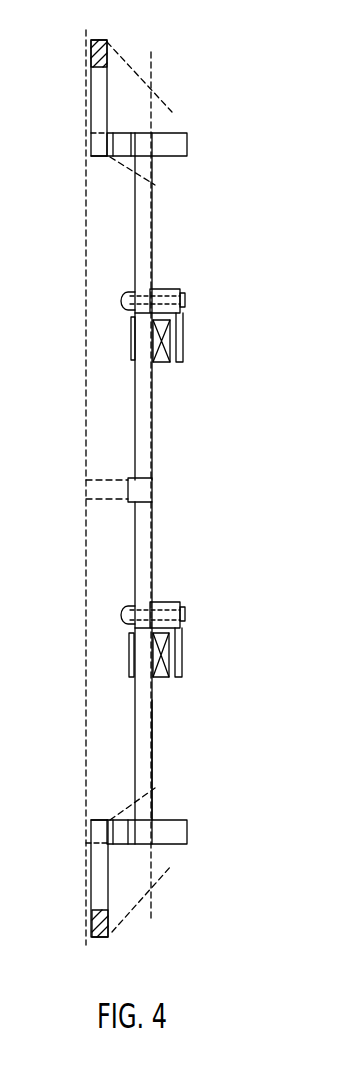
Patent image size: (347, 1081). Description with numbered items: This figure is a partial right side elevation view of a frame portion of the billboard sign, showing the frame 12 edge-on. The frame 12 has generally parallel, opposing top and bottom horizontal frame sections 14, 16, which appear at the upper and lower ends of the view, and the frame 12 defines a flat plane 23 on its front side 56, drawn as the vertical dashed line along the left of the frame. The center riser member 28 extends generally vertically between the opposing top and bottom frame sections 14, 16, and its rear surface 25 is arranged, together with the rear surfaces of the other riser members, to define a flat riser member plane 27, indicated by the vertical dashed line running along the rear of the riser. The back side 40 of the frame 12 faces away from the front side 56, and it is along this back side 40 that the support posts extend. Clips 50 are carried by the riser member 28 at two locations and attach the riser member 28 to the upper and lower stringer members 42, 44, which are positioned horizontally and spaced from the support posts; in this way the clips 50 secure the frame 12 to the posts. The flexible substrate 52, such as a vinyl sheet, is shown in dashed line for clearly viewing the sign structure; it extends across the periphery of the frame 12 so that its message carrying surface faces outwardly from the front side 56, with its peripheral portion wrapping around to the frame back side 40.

The frame 12 is at (88, 925).
The top horizontal frame section 14 is at (107, 42).
The bottom horizontal frame section 16 is at (103, 937).
The flat plane 23 is at (86, 600).
The rear surface 25 is at (152, 762).
The flat riser member plane 27 is at (153, 205).
The center riser member 28 is at (143, 590).
The back side 40 is at (183, 259).
The upper stringer member 42 is at (161, 365).
The lower stringer member 44 is at (160, 680).
The clip 50 is at (178, 324).
The flexible substrate 52 is at (83, 392).
The front side 56 is at (59, 216).